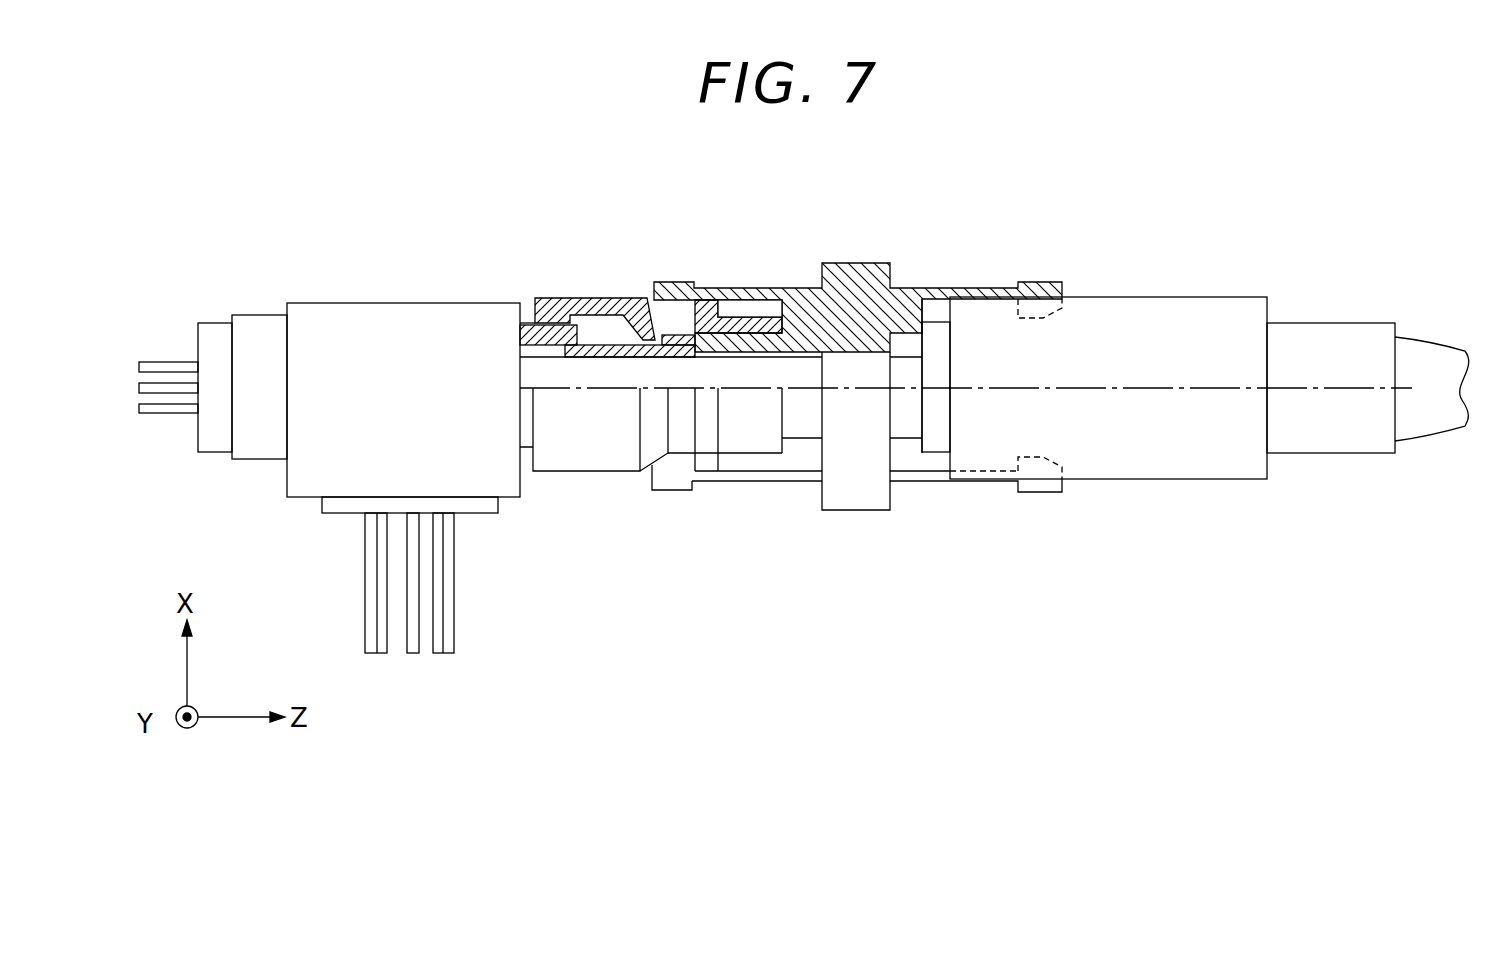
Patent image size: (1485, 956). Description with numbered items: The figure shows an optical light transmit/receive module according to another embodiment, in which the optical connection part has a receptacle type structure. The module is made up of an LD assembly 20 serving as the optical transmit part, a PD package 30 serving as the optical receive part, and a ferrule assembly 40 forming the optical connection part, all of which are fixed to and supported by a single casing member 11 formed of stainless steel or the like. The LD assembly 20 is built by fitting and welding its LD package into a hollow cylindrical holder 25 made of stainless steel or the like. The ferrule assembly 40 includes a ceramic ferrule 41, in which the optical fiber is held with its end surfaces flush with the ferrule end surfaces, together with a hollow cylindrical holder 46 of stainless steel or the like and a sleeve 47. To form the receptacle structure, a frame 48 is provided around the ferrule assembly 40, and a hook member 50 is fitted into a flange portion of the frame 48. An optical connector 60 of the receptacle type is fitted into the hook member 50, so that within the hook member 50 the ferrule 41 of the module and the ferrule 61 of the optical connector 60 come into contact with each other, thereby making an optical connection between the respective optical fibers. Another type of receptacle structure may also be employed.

The casing member 11 is at (398, 303).
The LD assembly 20 is at (210, 322).
The holder 25 is at (255, 315).
The PD package 30 is at (500, 503).
The ferrule assembly 40 is at (657, 264).
The ferrule 41 is at (795, 370).
The holder 46 is at (650, 335).
The sleeve 47 is at (565, 305).
The frame 48 is at (610, 472).
The hook member 50 is at (858, 518).
The optical connector 60 is at (1202, 295).
The ferrule 61 is at (897, 372).